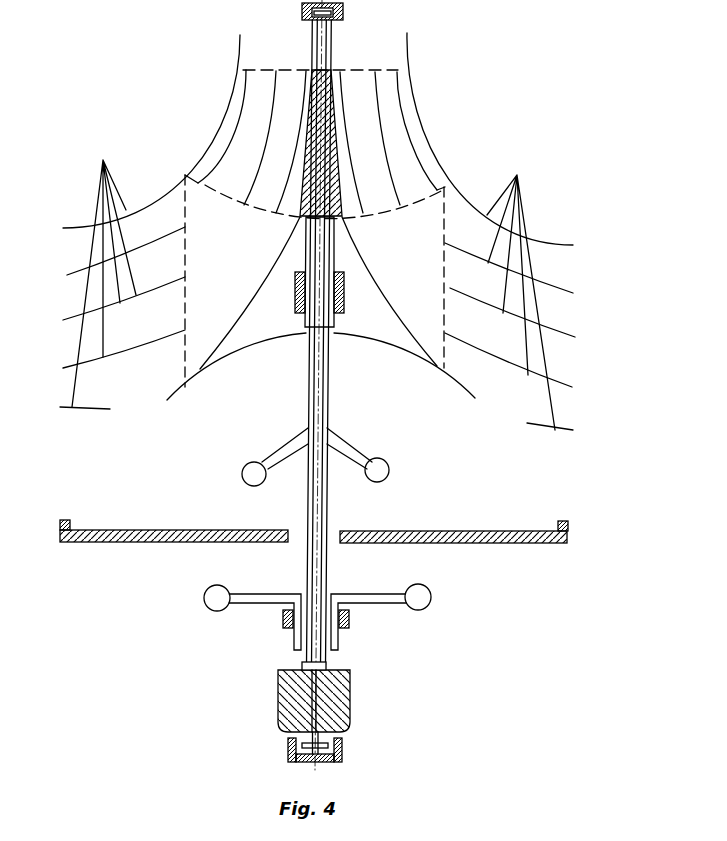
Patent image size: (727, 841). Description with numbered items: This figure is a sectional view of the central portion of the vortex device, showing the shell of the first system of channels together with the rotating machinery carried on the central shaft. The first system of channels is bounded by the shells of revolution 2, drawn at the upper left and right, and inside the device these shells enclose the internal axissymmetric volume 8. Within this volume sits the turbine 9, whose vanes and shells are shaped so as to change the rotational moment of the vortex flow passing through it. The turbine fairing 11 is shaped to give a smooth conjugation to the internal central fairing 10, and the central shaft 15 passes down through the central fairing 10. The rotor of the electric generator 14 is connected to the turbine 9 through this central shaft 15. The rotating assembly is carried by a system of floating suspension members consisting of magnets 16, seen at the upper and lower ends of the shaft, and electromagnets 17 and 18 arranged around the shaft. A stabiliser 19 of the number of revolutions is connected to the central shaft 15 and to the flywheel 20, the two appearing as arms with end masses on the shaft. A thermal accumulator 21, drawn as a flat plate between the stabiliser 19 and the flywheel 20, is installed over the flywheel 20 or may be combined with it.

The shells of revolution 2 is at (313, 282).
The internal axissymmetric volume 8 is at (317, 231).
The turbine 9 is at (341, 112).
The internal central fairing 10 is at (376, 282).
The turbine fairing 11 is at (337, 178).
The electric generator 14 is at (341, 707).
The central shaft 15 is at (312, 374).
The magnets 16 is at (343, 14).
The electromagnet 17 is at (294, 300).
The electromagnet 18 is at (281, 618).
The stabiliser of number of revolutions 19 is at (354, 443).
The flywheel 20 is at (431, 590).
The thermal accumulator 21 is at (148, 530).